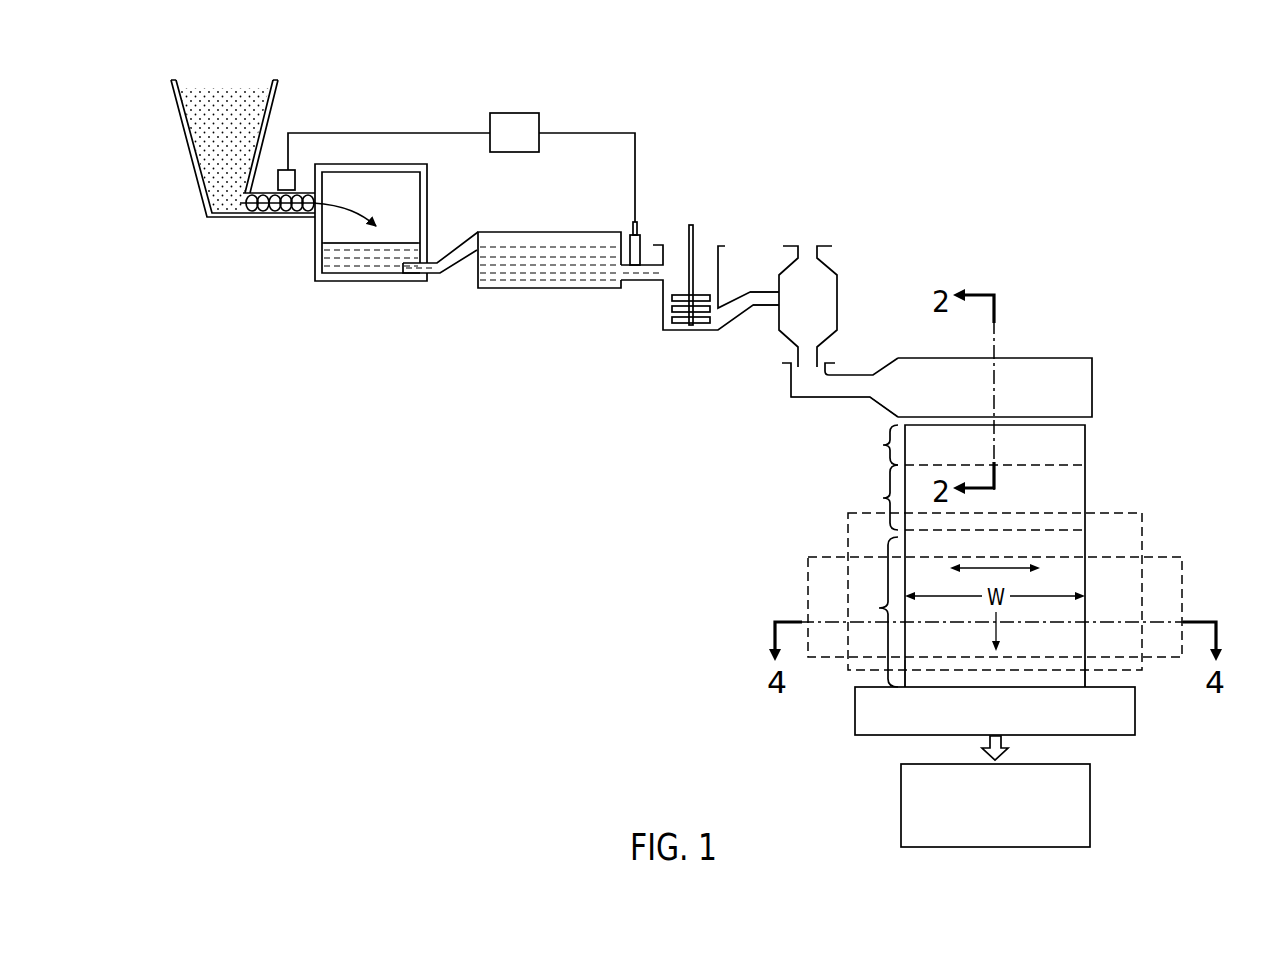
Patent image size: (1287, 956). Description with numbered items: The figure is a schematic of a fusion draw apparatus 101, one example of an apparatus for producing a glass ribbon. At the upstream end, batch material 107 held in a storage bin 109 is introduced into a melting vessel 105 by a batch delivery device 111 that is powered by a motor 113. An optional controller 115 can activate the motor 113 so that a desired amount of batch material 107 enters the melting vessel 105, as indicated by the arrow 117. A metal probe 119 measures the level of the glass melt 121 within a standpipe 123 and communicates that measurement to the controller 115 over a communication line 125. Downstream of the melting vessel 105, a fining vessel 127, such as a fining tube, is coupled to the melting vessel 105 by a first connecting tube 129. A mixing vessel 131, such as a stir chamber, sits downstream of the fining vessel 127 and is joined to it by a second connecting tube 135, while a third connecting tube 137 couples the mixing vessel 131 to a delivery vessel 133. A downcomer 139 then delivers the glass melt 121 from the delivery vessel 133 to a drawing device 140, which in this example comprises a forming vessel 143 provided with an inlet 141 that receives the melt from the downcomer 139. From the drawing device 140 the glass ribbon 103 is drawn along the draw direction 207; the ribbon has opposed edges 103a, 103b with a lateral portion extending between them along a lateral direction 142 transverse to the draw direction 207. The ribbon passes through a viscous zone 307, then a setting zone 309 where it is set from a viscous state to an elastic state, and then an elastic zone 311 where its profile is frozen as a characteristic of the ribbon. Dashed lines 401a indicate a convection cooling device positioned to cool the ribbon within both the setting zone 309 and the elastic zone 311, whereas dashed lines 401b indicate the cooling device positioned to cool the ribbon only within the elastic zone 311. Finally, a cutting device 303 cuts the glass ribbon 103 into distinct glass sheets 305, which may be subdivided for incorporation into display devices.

The fusion draw apparatus 101 is at (834, 163).
The melting vessel 105 is at (350, 302).
The batch material 107 is at (218, 88).
The storage bin 109 is at (188, 147).
The batch delivery device 111 is at (268, 208).
The motor 113 is at (293, 171).
The controller 115 is at (513, 113).
The arrow 117 is at (342, 205).
The metal probe 119 is at (630, 223).
The glass melt 121 is at (400, 242).
The standpipe 123 is at (642, 240).
The communication line 125 is at (583, 132).
The fining vessel 127 is at (543, 231).
The first connecting tube 129 is at (457, 246).
The mixing vessel 131 is at (720, 262).
The delivery vessel 133 is at (841, 280).
The second connecting tube 135 is at (646, 283).
The third connecting tube 137 is at (737, 318).
The downcomer 139 is at (822, 356).
The inlet 141 is at (792, 381).
The forming vessel 143 is at (1052, 357).
The drawing device 140 is at (1109, 368).
The glass ribbon 103 is at (1073, 450).
The opposed edge 103a is at (906, 676).
The opposed edge 103b is at (1084, 676).
The viscous zone 307 is at (868, 445).
The setting zone 309 is at (862, 497).
The elastic zone 311 is at (877, 609).
The dashed lines 401a is at (1143, 527).
The dashed lines 401b is at (1183, 571).
The lateral direction 142 is at (1005, 568).
The draw direction 207 is at (997, 624).
The cutting device 303 is at (838, 712).
The glass sheets 305 is at (910, 802).